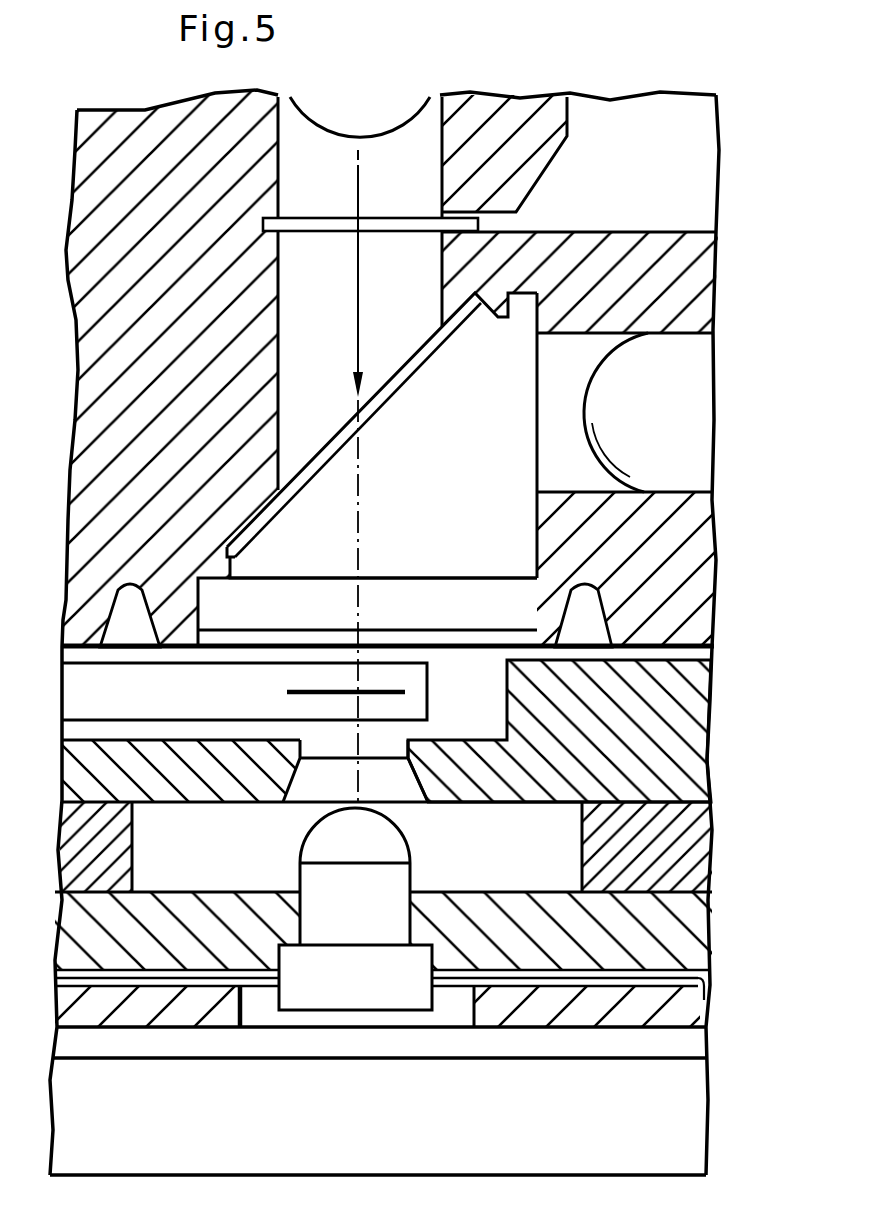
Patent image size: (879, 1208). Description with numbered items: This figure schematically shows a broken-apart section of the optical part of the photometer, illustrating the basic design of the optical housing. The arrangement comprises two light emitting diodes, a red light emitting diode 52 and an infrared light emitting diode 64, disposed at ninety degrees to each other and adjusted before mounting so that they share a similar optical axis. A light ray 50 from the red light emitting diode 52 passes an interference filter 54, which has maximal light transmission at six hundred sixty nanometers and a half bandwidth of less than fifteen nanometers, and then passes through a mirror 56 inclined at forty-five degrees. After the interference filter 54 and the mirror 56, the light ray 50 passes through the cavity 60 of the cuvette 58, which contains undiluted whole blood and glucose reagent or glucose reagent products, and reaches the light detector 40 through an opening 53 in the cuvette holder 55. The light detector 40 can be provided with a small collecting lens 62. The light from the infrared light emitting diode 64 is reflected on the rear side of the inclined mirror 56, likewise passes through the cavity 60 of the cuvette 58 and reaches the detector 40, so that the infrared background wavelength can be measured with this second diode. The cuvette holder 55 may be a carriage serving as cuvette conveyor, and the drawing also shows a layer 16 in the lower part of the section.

The thin layer / substrate strip 16 is at (712, 1003).
The light detector 40 is at (328, 983).
The light ray 50 is at (357, 312).
The red light emitting diode 52 is at (368, 112).
The opening 53 is at (412, 776).
The interference filter 54 is at (393, 233).
The cuvette holder 55 is at (673, 712).
The mirror 56 is at (331, 446).
The cuvette 58 is at (110, 690).
The cavity 60 is at (405, 688).
The collecting lens 62 is at (322, 844).
The infrared light emitting diode 64 is at (680, 405).